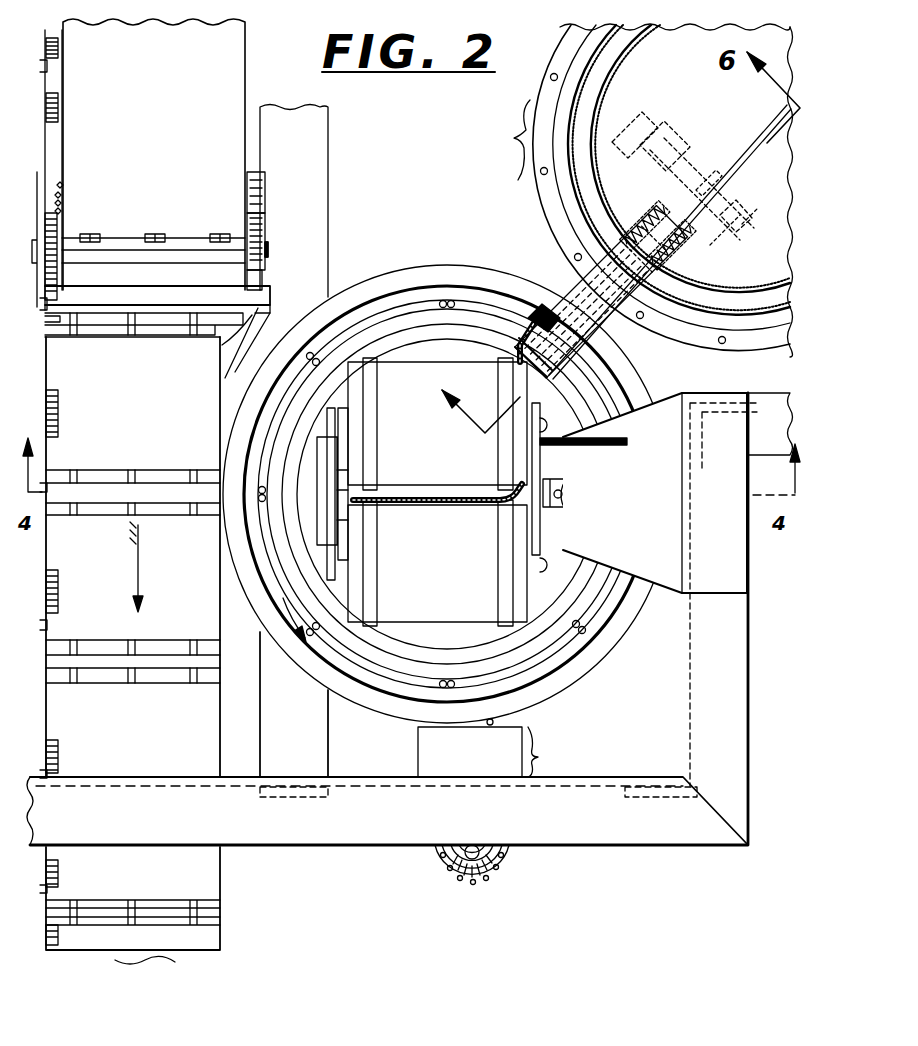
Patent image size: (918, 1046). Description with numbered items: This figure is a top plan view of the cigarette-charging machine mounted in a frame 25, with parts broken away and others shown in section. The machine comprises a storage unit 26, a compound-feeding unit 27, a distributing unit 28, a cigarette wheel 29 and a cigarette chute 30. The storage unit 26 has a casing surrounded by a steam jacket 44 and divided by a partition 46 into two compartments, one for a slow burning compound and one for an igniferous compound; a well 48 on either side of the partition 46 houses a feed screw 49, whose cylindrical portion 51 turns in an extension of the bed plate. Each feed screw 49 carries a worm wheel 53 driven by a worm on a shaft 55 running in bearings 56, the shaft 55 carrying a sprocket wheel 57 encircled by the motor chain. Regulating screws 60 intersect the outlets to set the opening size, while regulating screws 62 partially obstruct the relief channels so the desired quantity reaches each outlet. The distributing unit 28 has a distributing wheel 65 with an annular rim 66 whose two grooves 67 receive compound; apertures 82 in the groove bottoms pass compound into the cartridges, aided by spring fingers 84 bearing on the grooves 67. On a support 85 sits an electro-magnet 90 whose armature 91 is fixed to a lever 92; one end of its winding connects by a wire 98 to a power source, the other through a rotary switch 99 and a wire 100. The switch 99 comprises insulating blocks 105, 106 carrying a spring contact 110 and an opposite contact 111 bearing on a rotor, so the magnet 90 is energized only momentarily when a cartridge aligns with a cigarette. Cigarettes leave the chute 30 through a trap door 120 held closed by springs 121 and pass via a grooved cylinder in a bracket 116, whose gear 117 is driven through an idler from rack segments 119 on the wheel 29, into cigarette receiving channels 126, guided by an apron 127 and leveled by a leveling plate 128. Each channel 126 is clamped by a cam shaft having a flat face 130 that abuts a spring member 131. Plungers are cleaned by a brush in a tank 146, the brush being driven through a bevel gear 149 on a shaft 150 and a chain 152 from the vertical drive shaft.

The frame 25 is at (686, 831).
The storage unit 26 is at (509, 140).
The compound-feeding unit 27 is at (618, 273).
The distributing unit 28 is at (501, 479).
The cigarette wheel 29 is at (130, 665).
The cigarette chute 30 is at (234, 86).
The steam jacket 44 is at (577, 186).
The partition 46 is at (746, 162).
The well 48 is at (645, 252).
The feed screw 49 is at (692, 238).
The cylindrical portion 51 is at (492, 748).
The worm wheel 53 is at (698, 186).
The shaft 55 is at (714, 216).
The bearing 56 is at (746, 234).
The sprocket wheel 57 is at (648, 140).
The regulating screw 60 is at (536, 314).
The regulating screw 62 is at (560, 318).
The distributing wheel 65 is at (566, 654).
The annular rim 66 is at (376, 706).
The groove 67 is at (600, 596).
The aperture 82 is at (576, 616).
The spring finger 84 is at (492, 348).
The support 85 is at (714, 570).
The electro-magnet 90 is at (398, 366).
The armature 91 is at (355, 516).
The lever 92 is at (337, 506).
The wire 98 is at (570, 446).
The rotary switch 99 is at (590, 470).
The wire 100 is at (654, 516).
The block 105 is at (564, 518).
The block 106 is at (602, 484).
The spring contact 110 is at (560, 468).
The contact 111 is at (570, 508).
The bracket 116 is at (260, 176).
The gear 117 is at (61, 254).
The rack segment 119 is at (58, 420).
The trap door 120 is at (256, 228).
The spring 121 is at (256, 201).
The cigarette receiving channel 126 is at (118, 494).
The apron 127 is at (244, 306).
The leveling plate 128 is at (247, 300).
The flat face 130 is at (36, 306).
The spring member 131 is at (192, 684).
The tank 146 is at (466, 760).
The bevel gear 149 is at (496, 876).
The shaft 150 is at (457, 894).
The chain 152 is at (486, 876).